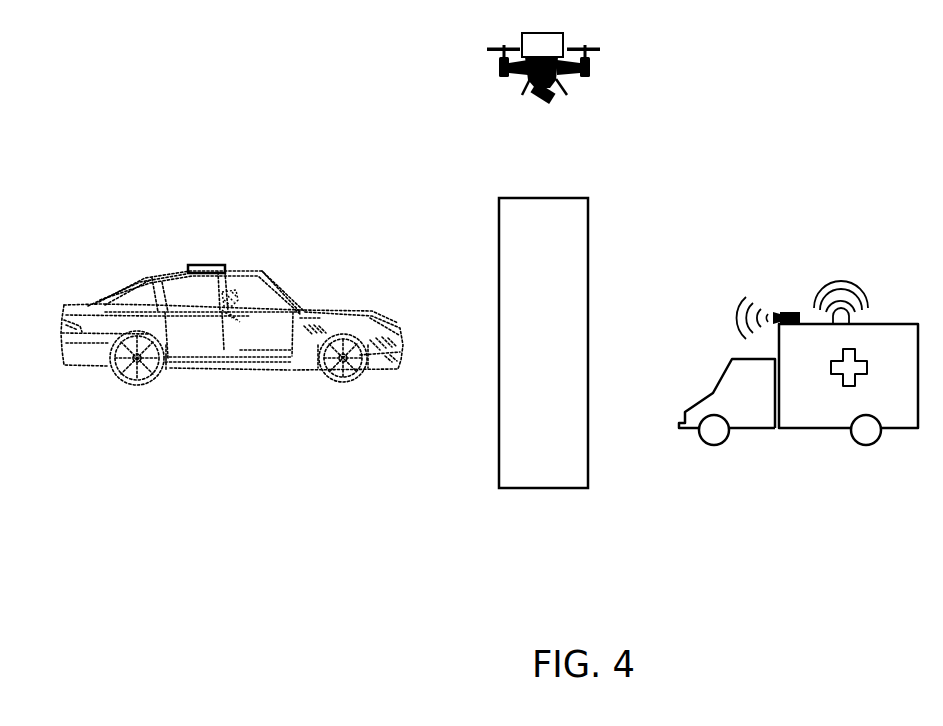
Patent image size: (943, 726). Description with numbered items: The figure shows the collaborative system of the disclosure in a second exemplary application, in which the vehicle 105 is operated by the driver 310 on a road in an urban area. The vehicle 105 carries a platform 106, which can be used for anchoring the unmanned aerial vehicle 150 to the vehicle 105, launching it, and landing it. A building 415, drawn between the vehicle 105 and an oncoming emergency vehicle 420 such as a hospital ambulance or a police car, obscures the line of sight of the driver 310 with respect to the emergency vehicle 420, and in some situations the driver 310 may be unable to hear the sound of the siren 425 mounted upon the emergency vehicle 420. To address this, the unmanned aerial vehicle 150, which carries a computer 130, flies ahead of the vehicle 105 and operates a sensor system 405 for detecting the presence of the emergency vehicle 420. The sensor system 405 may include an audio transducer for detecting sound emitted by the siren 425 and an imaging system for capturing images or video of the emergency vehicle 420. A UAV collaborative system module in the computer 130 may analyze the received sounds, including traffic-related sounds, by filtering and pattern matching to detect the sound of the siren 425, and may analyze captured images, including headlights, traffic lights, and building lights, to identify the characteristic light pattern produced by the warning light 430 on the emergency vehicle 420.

The vehicle 105 is at (73, 270).
The platform 106 is at (186, 265).
The computer 130 is at (542, 45).
The unmanned aerial vehicle 150 is at (466, 58).
The driver 310 is at (229, 292).
The sensor system 405 is at (543, 103).
The building 415 is at (543, 343).
The emergency vehicle 420 is at (694, 343).
The siren 425 is at (793, 311).
The warning light 430 is at (851, 322).